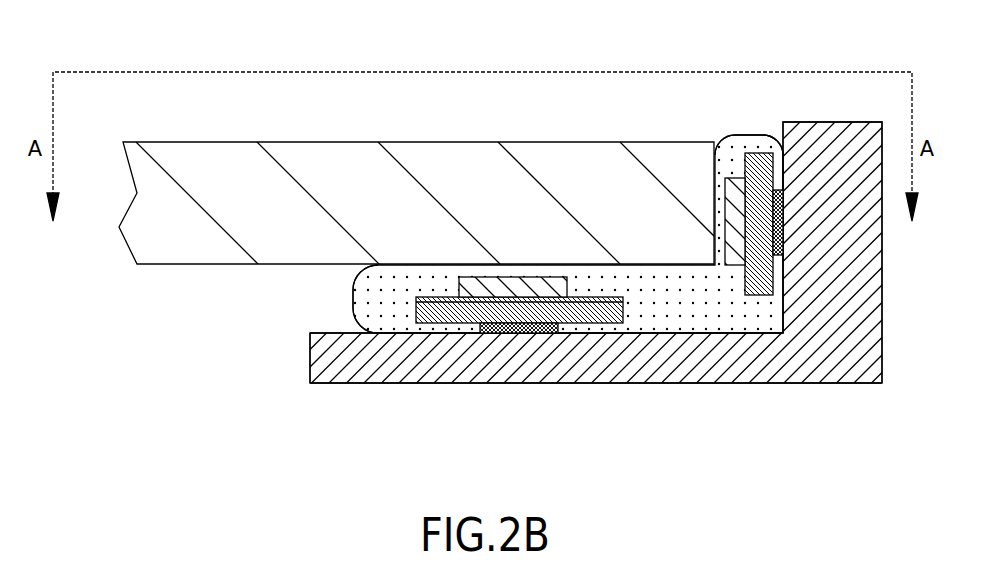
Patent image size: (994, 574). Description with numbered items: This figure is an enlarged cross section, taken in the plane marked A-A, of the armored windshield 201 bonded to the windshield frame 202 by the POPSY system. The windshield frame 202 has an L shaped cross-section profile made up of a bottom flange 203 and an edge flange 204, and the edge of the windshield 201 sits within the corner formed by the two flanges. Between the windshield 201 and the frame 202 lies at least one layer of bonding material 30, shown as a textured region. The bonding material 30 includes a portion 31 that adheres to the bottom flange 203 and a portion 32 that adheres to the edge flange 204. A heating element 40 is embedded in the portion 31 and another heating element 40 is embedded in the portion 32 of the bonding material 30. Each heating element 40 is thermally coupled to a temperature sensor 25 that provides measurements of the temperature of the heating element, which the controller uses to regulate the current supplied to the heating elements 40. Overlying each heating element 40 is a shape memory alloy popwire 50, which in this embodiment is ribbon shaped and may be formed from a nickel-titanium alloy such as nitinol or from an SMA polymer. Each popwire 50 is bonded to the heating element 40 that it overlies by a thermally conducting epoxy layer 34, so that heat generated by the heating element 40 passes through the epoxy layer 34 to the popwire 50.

The armored windshield 201 is at (216, 199).
The windshield frame 202 is at (808, 363).
The bottom flange 203 is at (611, 370).
The edge flange 204 is at (806, 258).
The temperature sensor 25 is at (785, 213).
The bonding material 30 is at (733, 318).
The portion of bonding material 31 is at (379, 298).
The portion of bonding material 32 is at (776, 145).
The thermally conducting epoxy layer 34 is at (716, 165).
The heating element 40 is at (758, 154).
The SMA popwire 50 is at (737, 222).